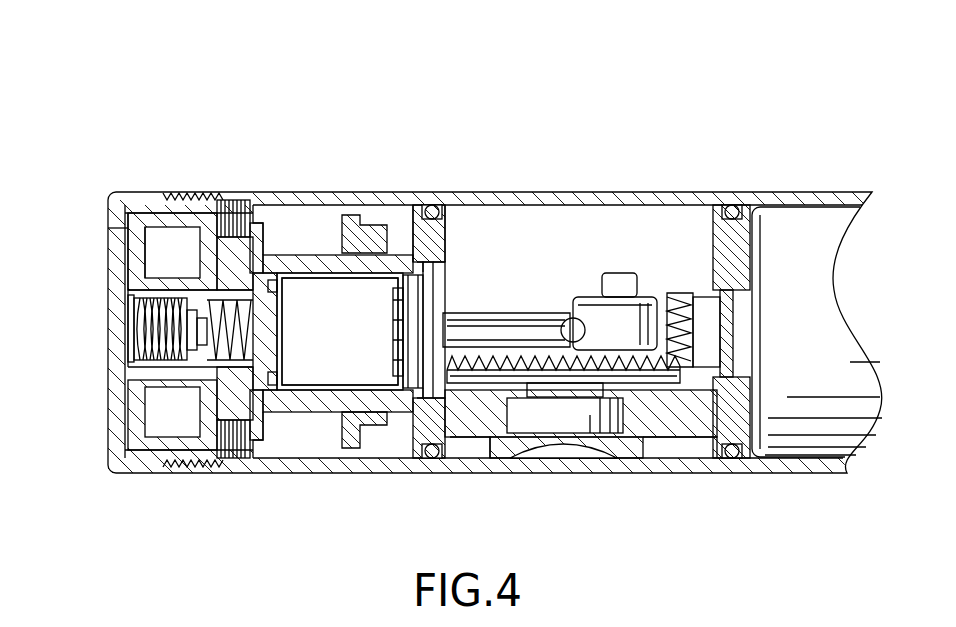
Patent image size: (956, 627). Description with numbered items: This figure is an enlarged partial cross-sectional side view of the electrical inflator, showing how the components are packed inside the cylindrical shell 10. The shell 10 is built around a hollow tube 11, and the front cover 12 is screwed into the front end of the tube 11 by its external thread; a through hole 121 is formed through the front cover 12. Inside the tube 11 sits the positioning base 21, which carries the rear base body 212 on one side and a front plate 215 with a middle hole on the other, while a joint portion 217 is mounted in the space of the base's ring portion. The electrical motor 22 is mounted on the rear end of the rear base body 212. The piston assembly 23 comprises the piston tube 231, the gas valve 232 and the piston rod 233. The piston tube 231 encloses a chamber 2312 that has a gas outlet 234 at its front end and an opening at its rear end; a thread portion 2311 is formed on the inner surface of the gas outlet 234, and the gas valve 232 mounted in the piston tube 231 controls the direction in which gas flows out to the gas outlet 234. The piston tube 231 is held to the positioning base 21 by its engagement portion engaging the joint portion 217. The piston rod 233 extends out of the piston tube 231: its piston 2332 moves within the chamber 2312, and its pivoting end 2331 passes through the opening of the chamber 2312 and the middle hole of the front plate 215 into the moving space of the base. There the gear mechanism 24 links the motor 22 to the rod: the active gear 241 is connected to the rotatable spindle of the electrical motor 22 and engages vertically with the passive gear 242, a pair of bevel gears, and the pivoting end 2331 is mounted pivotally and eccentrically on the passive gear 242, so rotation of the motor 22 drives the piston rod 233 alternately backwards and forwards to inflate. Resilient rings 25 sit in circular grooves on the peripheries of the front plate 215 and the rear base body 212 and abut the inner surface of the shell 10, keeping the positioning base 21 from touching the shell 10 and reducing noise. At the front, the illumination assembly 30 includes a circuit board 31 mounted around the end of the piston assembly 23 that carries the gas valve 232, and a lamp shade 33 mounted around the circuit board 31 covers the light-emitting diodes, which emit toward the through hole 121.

The cylindrical shell 10 is at (550, 197).
The tube 11 is at (270, 197).
The front cover 12 is at (145, 197).
The through hole 121 is at (128, 227).
The positioning base 21 is at (405, 207).
The rear base body 212 is at (745, 223).
The front plate 215 is at (445, 205).
The joint portion 217 is at (348, 228).
The electrical motor 22 is at (818, 427).
The piston assembly 23 is at (390, 294).
The piston tube 231 is at (317, 232).
The thread portion 2311 is at (147, 322).
The chamber 2312 is at (323, 373).
The gas valve 232 is at (233, 375).
The piston rod 233 is at (497, 333).
The pivoting end 2331 is at (623, 333).
The piston 2332 is at (417, 295).
The gas outlet 234 is at (148, 340).
The gear mechanism 24 is at (683, 277).
The active gear 241 is at (707, 305).
The passive gear 242 is at (572, 380).
The resilient rings 25 is at (432, 205).
The illumination assembly 30 is at (180, 197).
The circuit board 31 is at (207, 197).
The lamp shade 33 is at (132, 250).